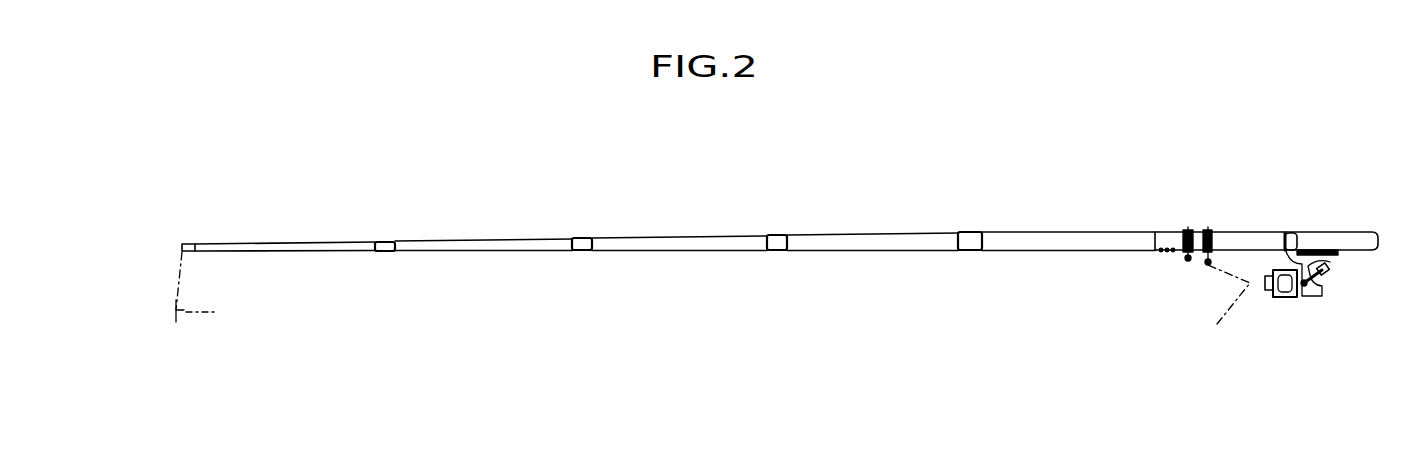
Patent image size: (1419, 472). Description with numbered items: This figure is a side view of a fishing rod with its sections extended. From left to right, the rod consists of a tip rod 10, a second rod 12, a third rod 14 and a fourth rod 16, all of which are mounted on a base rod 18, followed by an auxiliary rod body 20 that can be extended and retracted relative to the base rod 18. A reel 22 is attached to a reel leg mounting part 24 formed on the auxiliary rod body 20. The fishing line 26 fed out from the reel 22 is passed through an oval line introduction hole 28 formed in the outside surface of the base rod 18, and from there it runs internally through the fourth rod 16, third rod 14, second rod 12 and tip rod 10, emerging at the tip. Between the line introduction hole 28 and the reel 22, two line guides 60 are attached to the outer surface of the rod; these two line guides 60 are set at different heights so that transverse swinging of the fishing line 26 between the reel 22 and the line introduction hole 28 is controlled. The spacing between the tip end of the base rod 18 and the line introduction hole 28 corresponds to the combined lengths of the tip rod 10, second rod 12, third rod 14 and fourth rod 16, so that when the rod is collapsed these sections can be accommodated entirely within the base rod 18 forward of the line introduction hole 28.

The tip rod 10 is at (312, 242).
The second rod 12 is at (515, 240).
The third rod 14 is at (700, 238).
The fourth rod 16 is at (893, 237).
The base rod 18 is at (1088, 235).
The auxiliary rod body 20 is at (1345, 232).
The reel 22 is at (1300, 298).
The reel leg mounting part 24 is at (1337, 257).
The fishing line 26 is at (713, 304).
The line introduction hole 28 is at (1165, 252).
The line guides 60 is at (1208, 266).